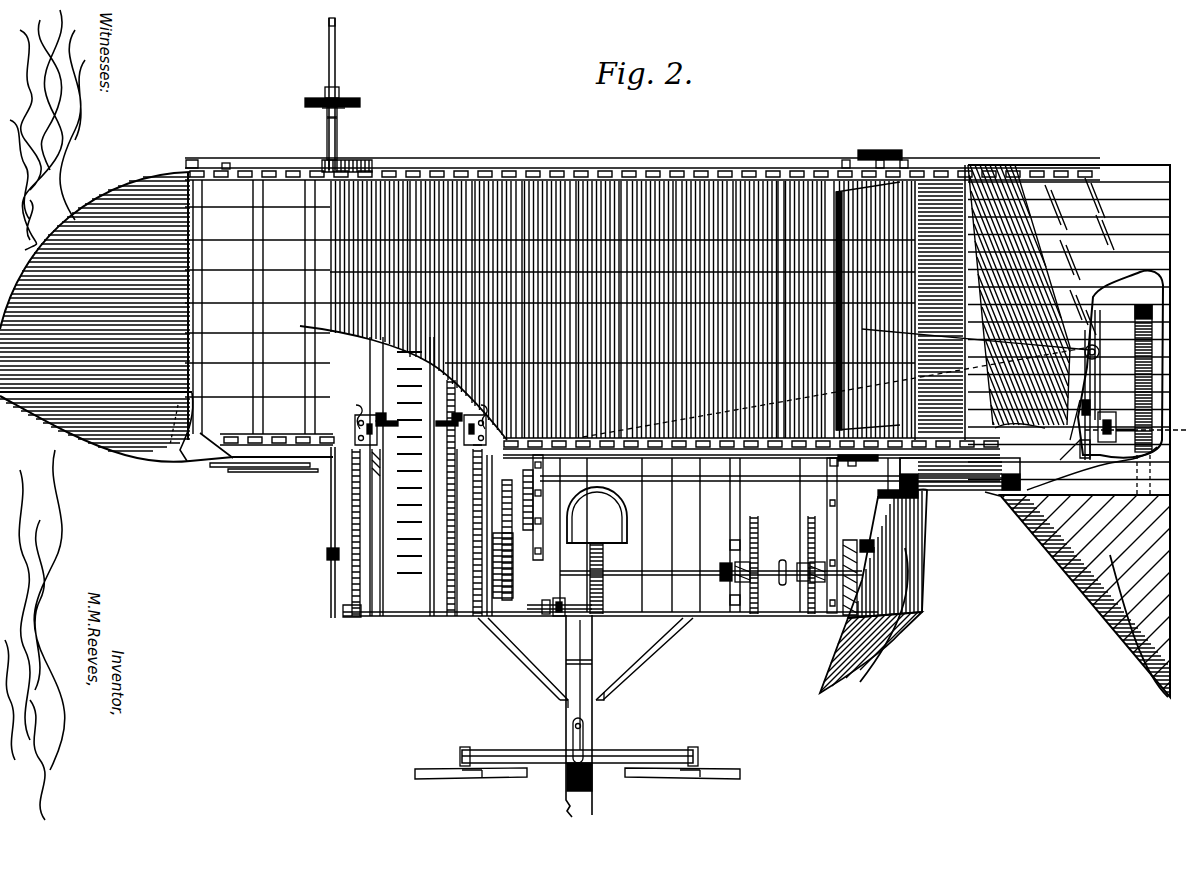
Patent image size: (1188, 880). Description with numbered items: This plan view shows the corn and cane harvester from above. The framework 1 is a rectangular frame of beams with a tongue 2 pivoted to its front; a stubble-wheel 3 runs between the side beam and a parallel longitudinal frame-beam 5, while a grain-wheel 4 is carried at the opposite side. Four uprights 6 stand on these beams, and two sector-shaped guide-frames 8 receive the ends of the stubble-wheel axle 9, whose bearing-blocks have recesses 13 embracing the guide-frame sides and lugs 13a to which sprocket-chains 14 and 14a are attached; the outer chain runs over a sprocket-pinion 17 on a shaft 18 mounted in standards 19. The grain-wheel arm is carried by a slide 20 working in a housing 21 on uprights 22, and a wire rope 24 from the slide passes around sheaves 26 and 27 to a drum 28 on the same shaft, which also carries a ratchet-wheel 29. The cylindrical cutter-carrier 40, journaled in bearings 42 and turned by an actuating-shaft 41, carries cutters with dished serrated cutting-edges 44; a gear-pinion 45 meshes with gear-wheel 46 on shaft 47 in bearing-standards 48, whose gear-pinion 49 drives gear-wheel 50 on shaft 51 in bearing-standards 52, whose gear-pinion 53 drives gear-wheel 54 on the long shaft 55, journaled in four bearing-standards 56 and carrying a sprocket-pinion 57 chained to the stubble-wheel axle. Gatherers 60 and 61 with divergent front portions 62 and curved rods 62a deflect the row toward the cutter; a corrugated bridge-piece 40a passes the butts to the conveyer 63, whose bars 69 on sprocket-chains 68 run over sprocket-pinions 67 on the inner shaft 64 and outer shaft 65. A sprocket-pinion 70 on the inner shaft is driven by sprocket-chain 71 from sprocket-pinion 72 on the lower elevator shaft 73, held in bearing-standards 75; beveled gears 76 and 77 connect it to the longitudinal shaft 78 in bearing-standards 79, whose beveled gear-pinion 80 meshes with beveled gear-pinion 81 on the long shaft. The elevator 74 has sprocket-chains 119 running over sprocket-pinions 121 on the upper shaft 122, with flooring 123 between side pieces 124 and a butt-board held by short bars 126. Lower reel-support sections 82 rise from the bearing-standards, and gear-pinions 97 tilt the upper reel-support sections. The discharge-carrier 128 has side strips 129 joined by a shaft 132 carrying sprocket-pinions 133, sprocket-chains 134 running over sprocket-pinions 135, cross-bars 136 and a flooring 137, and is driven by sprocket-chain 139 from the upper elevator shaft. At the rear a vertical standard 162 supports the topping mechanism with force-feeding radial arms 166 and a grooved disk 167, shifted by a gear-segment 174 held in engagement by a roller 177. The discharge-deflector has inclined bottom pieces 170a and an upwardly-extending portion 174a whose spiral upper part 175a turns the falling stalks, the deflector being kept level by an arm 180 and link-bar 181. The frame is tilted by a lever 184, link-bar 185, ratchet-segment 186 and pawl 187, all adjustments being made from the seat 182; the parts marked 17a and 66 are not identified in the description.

The frame 1 is at (402, 600).
The mast 2 is at (582, 693).
The standard 3 is at (395, 356).
The gear wheel 4 is at (1133, 353).
The guide 5 is at (445, 582).
The lever 6 is at (356, 479).
The bracket 8 is at (381, 424).
The rack bar 9 is at (388, 480).
The rack 13 is at (366, 420).
The bearing 13a is at (357, 426).
The upright 14 is at (330, 522).
The rack 14a is at (517, 497).
The foot 17 is at (352, 618).
The brace 17a is at (331, 602).
The post 18 is at (440, 618).
The shaft 19 is at (1104, 428).
The rod 20 is at (1124, 475).
The support 21 is at (1107, 430).
The link 22 is at (1065, 405).
The bar 24 is at (1118, 394).
The pulley 26 is at (1096, 350).
The beam 27 is at (615, 458).
The collar 28 is at (551, 617).
The shaft 29 is at (535, 617).
The drum 40 is at (962, 492).
The drum end 40a is at (992, 510).
The post 41 is at (782, 482).
The drum head 42 is at (925, 500).
The rack 44 is at (540, 520).
The cable 45 is at (540, 425).
The guide 46 is at (548, 502).
The rack 47 is at (525, 507).
The pinion 48 is at (551, 507).
The pinion 49 is at (538, 506).
The shaft 50 is at (520, 556).
The gear 51 is at (456, 420).
The gear 52 is at (540, 545).
The lever 53 is at (455, 535).
The rod 54 is at (453, 386).
The shaft 55 is at (665, 565).
The bearing 56 is at (462, 596).
The guide 57 is at (411, 607).
The tail plane 60 is at (1078, 255).
The fin 61 is at (935, 564).
The rudder 62 is at (898, 675).
The rudder edge 62a is at (866, 682).
The panel 63 is at (958, 260).
The panel 64 is at (991, 343).
The cable 65 is at (1021, 418).
The pulley 66 is at (905, 161).
The cable 67 is at (947, 313).
The cable 68 is at (960, 170).
The pulley 69 is at (951, 385).
The bracket 70 is at (895, 152).
The pulley 71 is at (879, 152).
The pulley 72 is at (865, 152).
The partition 73 is at (835, 254).
The gas bag 74 is at (713, 330).
The bracket 75 is at (848, 161).
The post 76 is at (880, 492).
The bracket 77 is at (830, 463).
The post 78 is at (846, 492).
The bearing 79 is at (832, 477).
The cable 80 is at (875, 426).
The fin post 81 is at (856, 592).
The gear 82 is at (735, 566).
The post 97 is at (758, 544).
The bag 119 is at (568, 168).
The bearing 121 is at (350, 160).
The bearing 122 is at (333, 130).
The gas bag 123 is at (614, 330).
The frame 124 is at (675, 168).
The beam 126 is at (684, 475).
The frame 128 is at (257, 307).
The rail 129 is at (275, 168).
The bracket 132 is at (226, 166).
The nose frame 133 is at (188, 170).
The rail 134 is at (280, 440).
The brace 135 is at (328, 438).
The strut 136 is at (314, 322).
The strut 137 is at (250, 365).
The bracket 139 is at (228, 438).
The shaft 162 is at (326, 130).
The collar 166 is at (340, 109).
The pulley 167 is at (345, 104).
The nose 170a is at (160, 306).
The nose covering 174 is at (76, 330).
The belly 174a is at (166, 436).
The flap 175a is at (196, 435).
The clamp 177 is at (328, 556).
The bar 180 is at (218, 472).
The bar 181 is at (238, 472).
The housing 182 is at (609, 530).
The rack 184 is at (606, 592).
The mast 185 is at (596, 652).
The rack 186 is at (606, 600).
The gear 187 is at (632, 567).